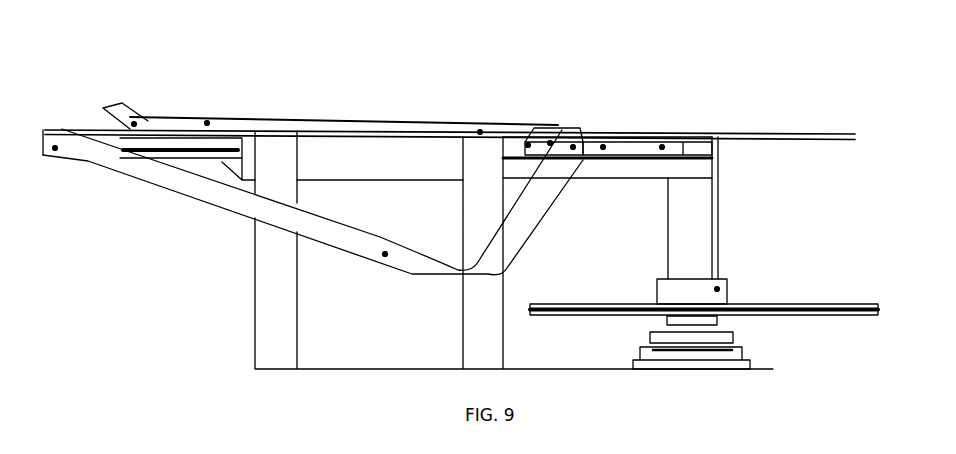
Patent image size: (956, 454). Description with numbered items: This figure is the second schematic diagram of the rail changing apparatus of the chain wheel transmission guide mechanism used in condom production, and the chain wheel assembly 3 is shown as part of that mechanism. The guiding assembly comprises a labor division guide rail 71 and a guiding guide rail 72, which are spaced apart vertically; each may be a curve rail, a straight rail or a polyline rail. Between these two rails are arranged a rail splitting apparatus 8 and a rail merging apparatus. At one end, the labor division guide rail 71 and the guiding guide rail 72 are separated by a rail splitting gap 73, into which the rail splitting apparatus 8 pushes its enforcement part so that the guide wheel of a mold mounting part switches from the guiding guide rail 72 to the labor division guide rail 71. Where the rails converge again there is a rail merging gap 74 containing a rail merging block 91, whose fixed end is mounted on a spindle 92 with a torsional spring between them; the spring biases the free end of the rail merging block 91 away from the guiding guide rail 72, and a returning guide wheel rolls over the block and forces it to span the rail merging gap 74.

The chain wheel assembly 3 is at (790, 315).
The rail splitting apparatus 8 is at (550, 140).
The labor division guide rail 71 is at (323, 120).
The guiding guide rail 72 is at (623, 143).
The rail splitting gap 73 is at (585, 142).
The rail merging gap 74 is at (102, 132).
The rail merging block 91 is at (117, 112).
The spindle 92 is at (138, 124).